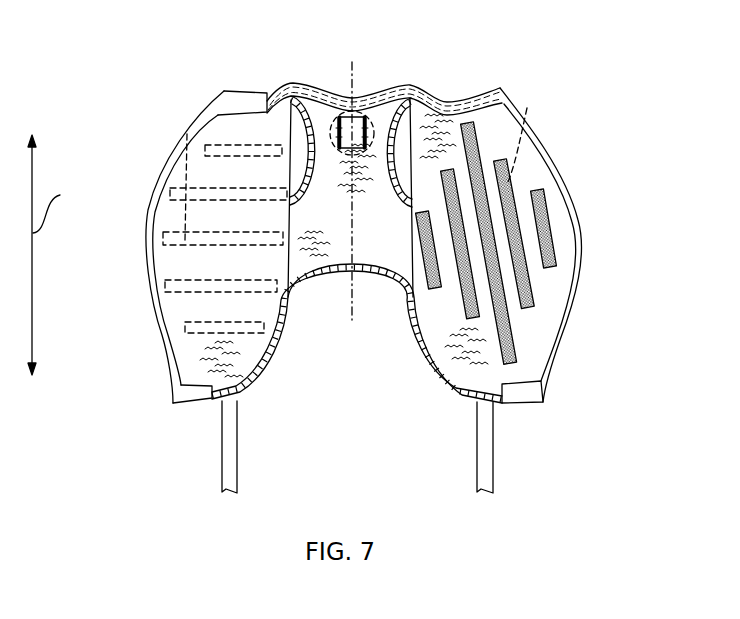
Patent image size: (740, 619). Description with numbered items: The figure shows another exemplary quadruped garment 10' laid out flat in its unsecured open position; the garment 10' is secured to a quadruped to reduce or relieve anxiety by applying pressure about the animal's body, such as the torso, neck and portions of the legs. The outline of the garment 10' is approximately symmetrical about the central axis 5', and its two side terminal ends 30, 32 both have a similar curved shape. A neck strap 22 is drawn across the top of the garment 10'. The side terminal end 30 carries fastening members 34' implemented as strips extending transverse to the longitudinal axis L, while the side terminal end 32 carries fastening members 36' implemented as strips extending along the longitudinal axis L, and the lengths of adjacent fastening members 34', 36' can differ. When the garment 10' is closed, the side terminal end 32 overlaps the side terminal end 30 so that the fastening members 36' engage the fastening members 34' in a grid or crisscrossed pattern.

The central axis 5' is at (374, 165).
The quadruped garment 10' is at (371, 252).
The neck strap 22 is at (292, 100).
The side terminal end 30 is at (131, 247).
The side terminal end 32 is at (614, 245).
The fastening members 34' is at (195, 220).
The fastening members 36' is at (518, 229).
The longitudinal axis L is at (51, 255).